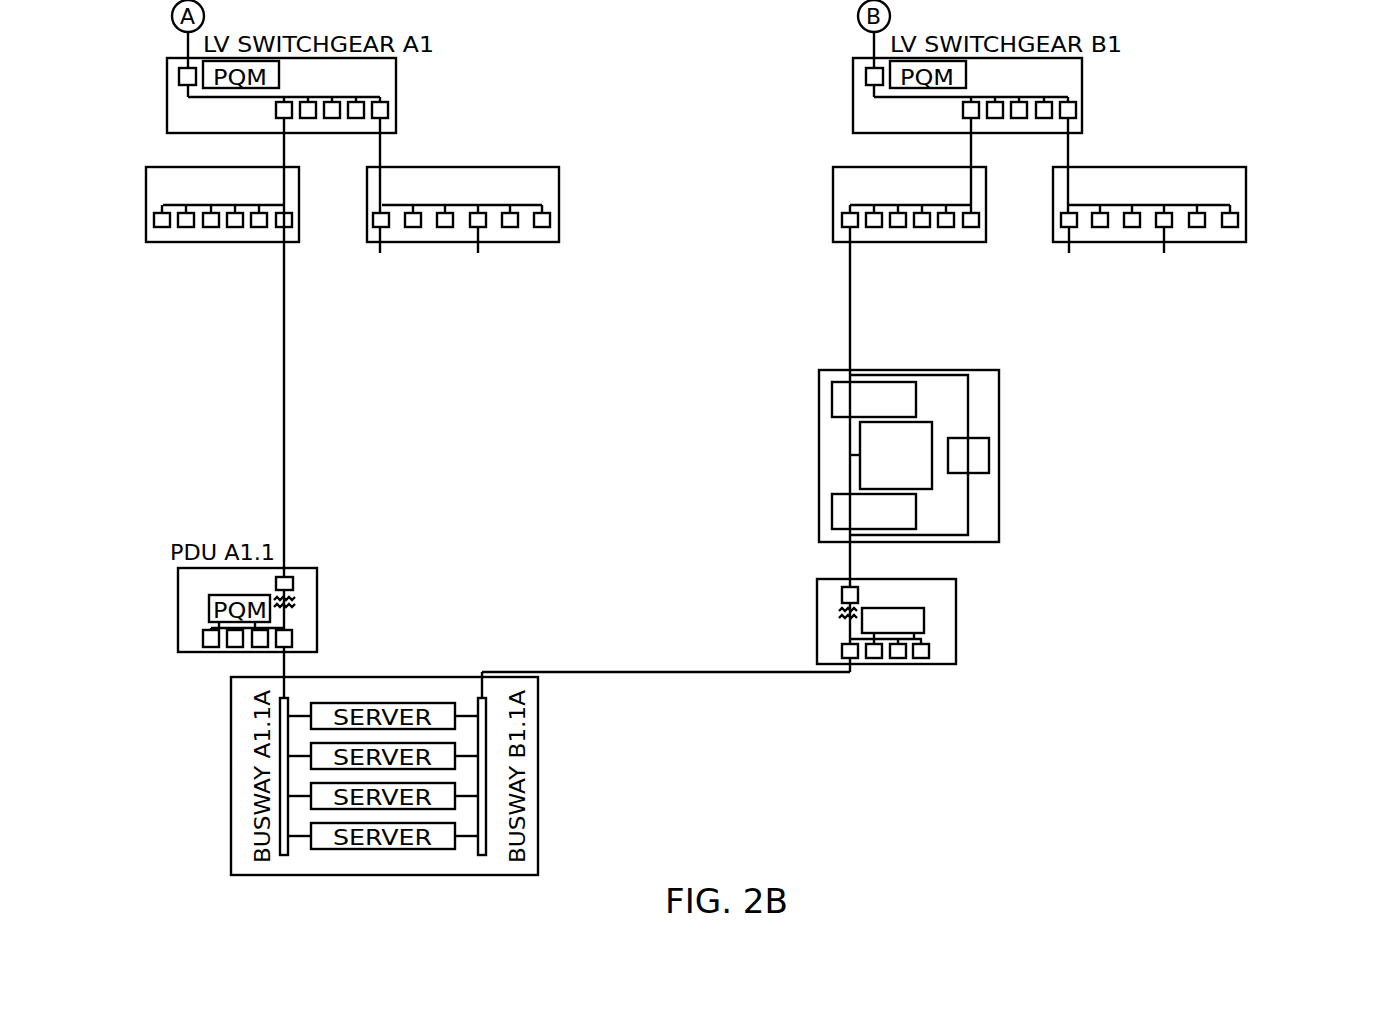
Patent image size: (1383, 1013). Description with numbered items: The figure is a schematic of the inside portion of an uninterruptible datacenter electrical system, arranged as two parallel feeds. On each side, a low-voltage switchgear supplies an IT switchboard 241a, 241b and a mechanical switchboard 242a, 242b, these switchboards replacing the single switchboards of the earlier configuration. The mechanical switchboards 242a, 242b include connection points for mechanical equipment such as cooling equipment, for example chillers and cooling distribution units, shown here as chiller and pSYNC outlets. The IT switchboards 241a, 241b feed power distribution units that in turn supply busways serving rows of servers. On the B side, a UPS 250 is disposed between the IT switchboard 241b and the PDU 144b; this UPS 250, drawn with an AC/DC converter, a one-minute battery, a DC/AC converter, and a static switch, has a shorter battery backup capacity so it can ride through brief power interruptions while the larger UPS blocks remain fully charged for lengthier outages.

The IT switchboard 241a is at (146, 207).
The mechanical switchboard 242a is at (559, 207).
The IT switchboard 241b is at (833, 207).
The mechanical switchboard 242b is at (1246, 207).
The UPS 250 is at (999, 452).
The PDU 144b is at (956, 620).